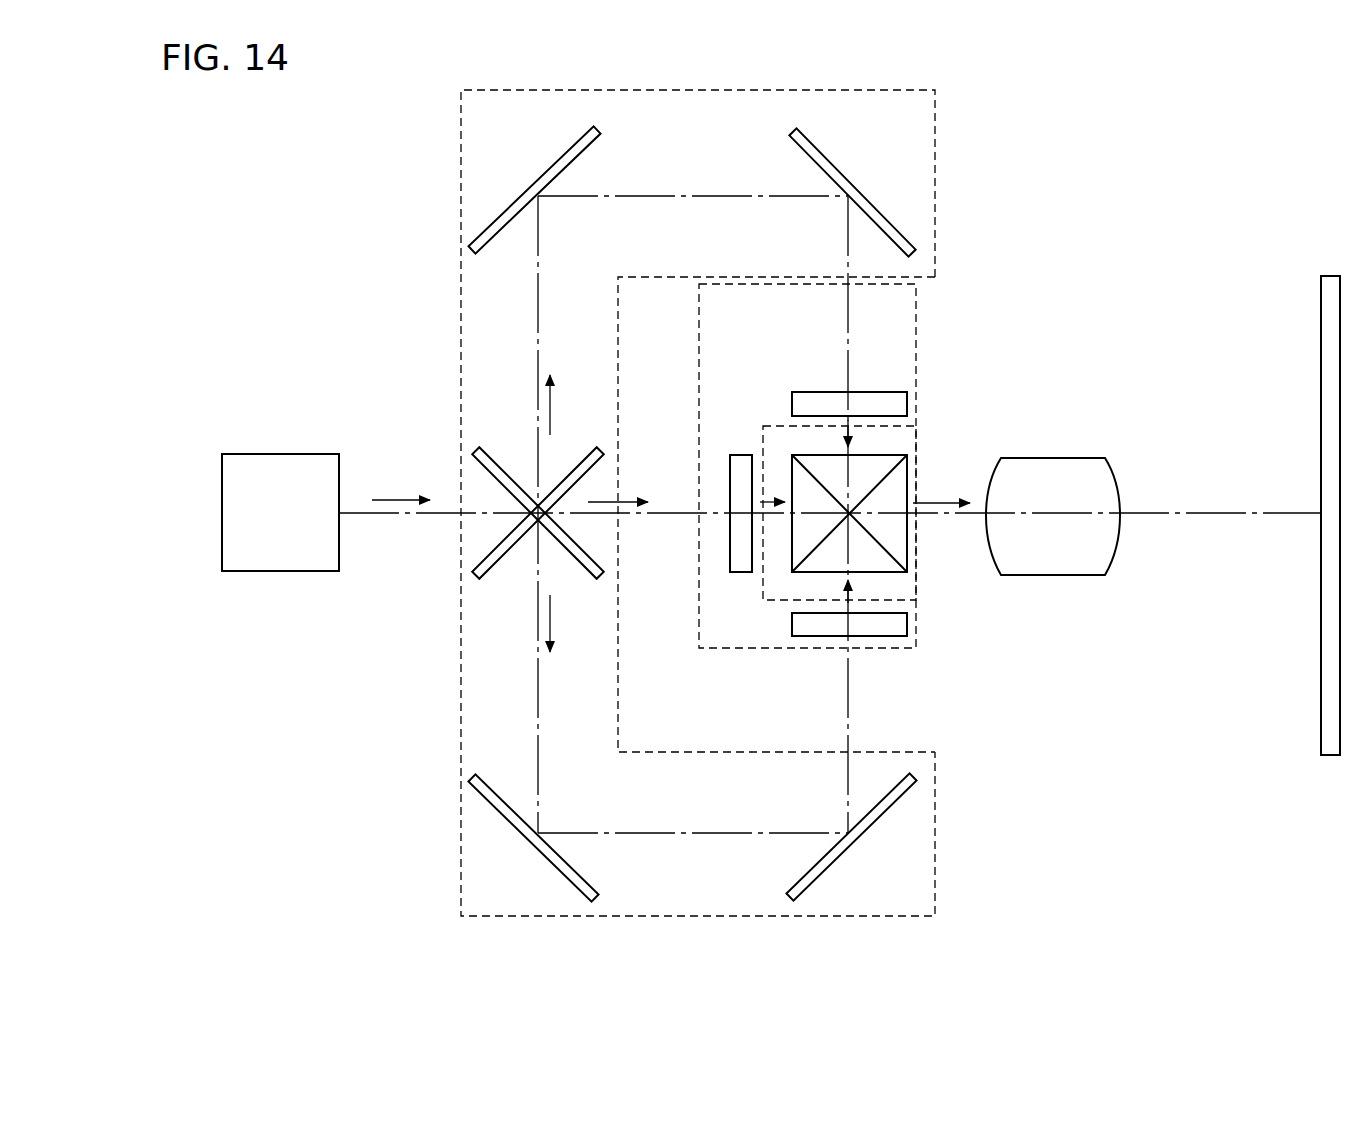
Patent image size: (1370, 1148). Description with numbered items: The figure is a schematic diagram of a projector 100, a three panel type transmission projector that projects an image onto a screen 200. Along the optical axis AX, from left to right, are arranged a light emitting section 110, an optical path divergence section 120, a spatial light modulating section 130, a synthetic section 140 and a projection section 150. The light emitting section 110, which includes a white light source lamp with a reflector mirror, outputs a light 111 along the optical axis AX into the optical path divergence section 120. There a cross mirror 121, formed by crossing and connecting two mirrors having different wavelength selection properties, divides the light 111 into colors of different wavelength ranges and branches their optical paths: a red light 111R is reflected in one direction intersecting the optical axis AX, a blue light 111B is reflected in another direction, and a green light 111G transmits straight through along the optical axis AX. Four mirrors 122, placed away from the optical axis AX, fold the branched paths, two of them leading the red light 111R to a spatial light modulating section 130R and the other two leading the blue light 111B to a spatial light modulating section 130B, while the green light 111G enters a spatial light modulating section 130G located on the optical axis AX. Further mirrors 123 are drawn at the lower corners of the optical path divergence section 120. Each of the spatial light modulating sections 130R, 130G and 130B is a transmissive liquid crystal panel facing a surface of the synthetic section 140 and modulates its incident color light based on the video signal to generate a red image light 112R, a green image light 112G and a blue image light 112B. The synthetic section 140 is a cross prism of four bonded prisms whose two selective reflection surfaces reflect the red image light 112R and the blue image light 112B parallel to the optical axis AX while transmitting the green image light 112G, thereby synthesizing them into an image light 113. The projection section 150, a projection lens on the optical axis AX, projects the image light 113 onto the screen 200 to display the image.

The projector 100 is at (314, 156).
The light emitting section 110 is at (302, 454).
The light 111 is at (400, 500).
The optical axis AX is at (400, 513).
The optical path divergence section 120 is at (884, 89).
The cross mirror 121 is at (497, 455).
The mirrors 122 is at (535, 187).
The reflection mirror 123 is at (530, 840).
The red light 111R is at (556, 396).
The green light 111G is at (630, 500).
The blue light 111B is at (558, 640).
The spatial light modulating section 130 is at (699, 317).
The spatial light modulating section 130R is at (907, 404).
The spatial light modulating section 130G is at (742, 572).
The spatial light modulating section 130B is at (907, 623).
The red image light 112R is at (851, 442).
The green image light 112G is at (775, 500).
The blue image light 112B is at (851, 586).
The synthetic section 140 is at (907, 468).
The image light 113 is at (945, 505).
The projection section 150 is at (1095, 440).
The screen 200 is at (1325, 276).